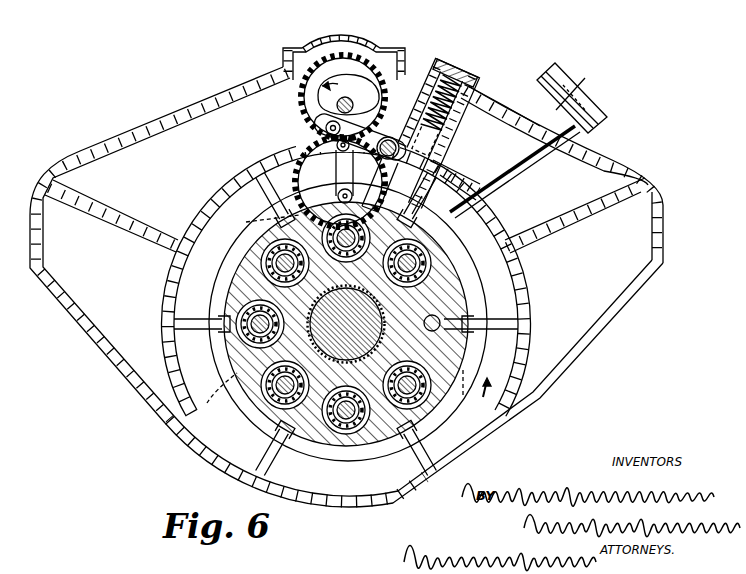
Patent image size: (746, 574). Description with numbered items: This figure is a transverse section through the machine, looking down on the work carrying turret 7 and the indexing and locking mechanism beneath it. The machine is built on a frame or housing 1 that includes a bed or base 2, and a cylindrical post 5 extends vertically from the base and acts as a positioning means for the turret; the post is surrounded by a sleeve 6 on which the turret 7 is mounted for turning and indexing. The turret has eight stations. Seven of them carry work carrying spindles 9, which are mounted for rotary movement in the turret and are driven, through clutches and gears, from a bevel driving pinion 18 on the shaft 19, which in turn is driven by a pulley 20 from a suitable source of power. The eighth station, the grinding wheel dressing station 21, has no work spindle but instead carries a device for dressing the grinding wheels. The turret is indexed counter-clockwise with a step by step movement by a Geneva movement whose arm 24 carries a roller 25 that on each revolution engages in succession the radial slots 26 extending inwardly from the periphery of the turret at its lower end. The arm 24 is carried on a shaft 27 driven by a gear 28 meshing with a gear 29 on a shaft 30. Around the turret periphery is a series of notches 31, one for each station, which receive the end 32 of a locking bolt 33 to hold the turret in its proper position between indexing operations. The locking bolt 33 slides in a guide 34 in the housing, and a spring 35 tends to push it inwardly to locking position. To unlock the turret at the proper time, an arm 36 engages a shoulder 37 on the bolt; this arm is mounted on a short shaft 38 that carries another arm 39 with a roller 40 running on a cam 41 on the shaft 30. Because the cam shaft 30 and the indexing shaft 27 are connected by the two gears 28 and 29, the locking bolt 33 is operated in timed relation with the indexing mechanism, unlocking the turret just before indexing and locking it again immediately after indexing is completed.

The frame or housing 1 is at (134, 131).
The bed or base 2 is at (362, 509).
The cylindrical post 5 is at (372, 320).
The sleeve 6 is at (440, 333).
The work carrying turret 7 is at (460, 292).
The work carrying spindles 9 is at (248, 250).
The bevel driving pinion 18 is at (450, 256).
The shaft 19 is at (512, 172).
The pulley 20 is at (560, 78).
The grinding wheel dressing station 21 is at (442, 323).
The arm 24 is at (370, 175).
The roller 25 is at (337, 144).
The radial slots 26 is at (347, 312).
The shaft 27 is at (338, 198).
The gear 28 is at (316, 174).
The gear 29 is at (384, 78).
The shaft 30 is at (355, 100).
The notches 31 is at (232, 277).
The end of the locking bolt 32 is at (416, 212).
The locking bolt 33 is at (440, 138).
The guide 34 is at (478, 100).
The spring 35 is at (453, 85).
The arm 36 is at (383, 185).
The shoulder 37 is at (422, 140).
The short shaft 38 is at (390, 137).
The arm 39 is at (359, 136).
The roller 40 is at (321, 119).
The cam 41 is at (350, 78).